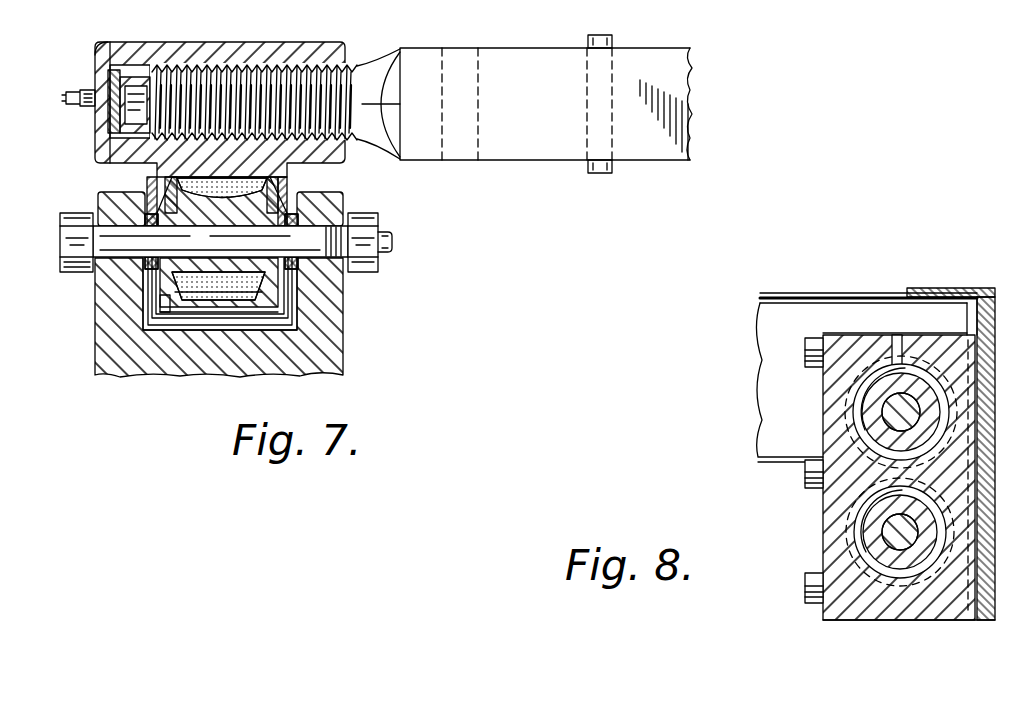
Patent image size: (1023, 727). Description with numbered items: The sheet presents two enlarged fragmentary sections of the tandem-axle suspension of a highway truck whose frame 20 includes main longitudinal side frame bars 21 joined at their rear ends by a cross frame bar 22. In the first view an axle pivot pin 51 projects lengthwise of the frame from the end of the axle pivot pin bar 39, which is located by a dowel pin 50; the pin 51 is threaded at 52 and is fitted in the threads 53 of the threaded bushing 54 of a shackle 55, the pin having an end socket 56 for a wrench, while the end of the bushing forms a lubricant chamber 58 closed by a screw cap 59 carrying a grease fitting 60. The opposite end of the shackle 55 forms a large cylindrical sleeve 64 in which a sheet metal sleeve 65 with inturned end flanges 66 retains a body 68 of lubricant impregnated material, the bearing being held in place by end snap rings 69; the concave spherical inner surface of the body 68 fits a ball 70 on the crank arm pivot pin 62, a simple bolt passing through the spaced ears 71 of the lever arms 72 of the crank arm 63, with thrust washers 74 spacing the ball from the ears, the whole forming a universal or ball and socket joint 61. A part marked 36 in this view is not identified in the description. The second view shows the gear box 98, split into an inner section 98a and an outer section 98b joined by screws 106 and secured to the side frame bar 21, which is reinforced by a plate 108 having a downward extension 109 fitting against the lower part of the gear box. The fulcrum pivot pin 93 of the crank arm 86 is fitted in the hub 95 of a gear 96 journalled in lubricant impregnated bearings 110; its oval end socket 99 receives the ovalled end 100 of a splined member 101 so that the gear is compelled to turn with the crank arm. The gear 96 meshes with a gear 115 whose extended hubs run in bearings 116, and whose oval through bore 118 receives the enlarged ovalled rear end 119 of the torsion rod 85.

In FIG. 8, the frame 20 is at (777, 286).
In FIG. 8, the main longitudinal side frame bar 21 is at (937, 288).
In FIG. 8, the cross frame bar 22 is at (762, 311).
In FIG. 7, the tool bar 36 is at (690, 52).
In FIG. 7, the axle pivot pin bar 39 is at (690, 104).
In FIG. 7, the locating dowel pin 50 is at (602, 173).
In FIG. 7, the axle pivot pin 51 is at (352, 70).
In FIG. 7, the threads 52 is at (348, 140).
In FIG. 7, the threads 53 is at (246, 72).
In FIG. 7, the threaded bushing 54 is at (300, 56).
In FIG. 7, the shackle 55 is at (213, 42).
In FIG. 7, the end socket 56 is at (126, 114).
In FIG. 7, the lubricant chamber 58 is at (110, 80).
In FIG. 7, the screw cap 59 is at (97, 55).
In FIG. 7, the fitting 60 is at (64, 98).
In FIG. 7, the universal or ball and socket joint 61 is at (213, 319).
In FIG. 7, the crank arm pivot pin 62 is at (393, 243).
In FIG. 7, the crank arm 63 is at (352, 363).
In FIG. 7, the cylindrical sleeve 64 is at (236, 318).
In FIG. 7, the sheet metal sleeve 65 is at (178, 300).
In FIG. 7, the inturned end flanges 66 is at (175, 300).
In FIG. 7, the body of lubricant impregnated material 68 is at (262, 330).
In FIG. 7, the end snap rings 69 is at (287, 185).
In FIG. 7, the ball 70 is at (222, 201).
In FIG. 7, the spaced ears 71 is at (105, 197).
In FIG. 7, the lever arms 72 is at (97, 368).
In FIG. 7, the thrust washers 74 is at (150, 200).
In FIG. 8, the torsion rod 85 is at (895, 412).
In FIG. 8, the crank arm 86 is at (885, 562).
In FIG. 8, the fulcrum pivot pin 93 is at (872, 572).
In FIG. 8, the hub 95 is at (898, 582).
In FIG. 8, the gear 96 is at (920, 590).
In FIG. 8, the gear box 98 is at (823, 522).
In FIG. 8, the inner section 98a is at (855, 347).
In FIG. 8, the outer section 98b is at (950, 620).
In FIG. 8, the oval end socket 99 is at (886, 536).
In FIG. 8, the ovalled end 100 is at (890, 513).
In FIG. 8, the splined member 101 is at (880, 546).
In FIG. 8, the screws 106 is at (805, 351).
In FIG. 8, the reinforcing plate 108 is at (985, 290).
In FIG. 8, the downwardly extension 109 is at (961, 605).
In FIG. 8, the bearings 110 is at (832, 604).
In FIG. 8, the gear 115 is at (930, 362).
In FIG. 8, the bearings 116 is at (897, 360).
In FIG. 8, the through bore 118 is at (900, 430).
In FIG. 8, the ovalled rear end 119 is at (898, 396).